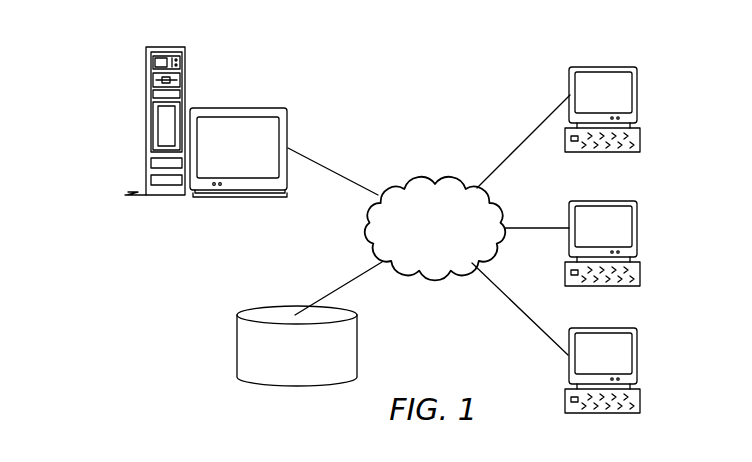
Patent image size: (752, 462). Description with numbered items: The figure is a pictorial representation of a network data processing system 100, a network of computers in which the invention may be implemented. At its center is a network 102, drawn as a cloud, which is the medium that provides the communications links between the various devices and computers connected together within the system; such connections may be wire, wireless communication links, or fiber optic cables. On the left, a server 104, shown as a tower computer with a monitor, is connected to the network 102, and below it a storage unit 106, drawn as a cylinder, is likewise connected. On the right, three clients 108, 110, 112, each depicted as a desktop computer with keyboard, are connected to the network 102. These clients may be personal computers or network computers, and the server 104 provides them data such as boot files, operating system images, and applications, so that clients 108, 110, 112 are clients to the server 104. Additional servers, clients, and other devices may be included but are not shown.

The network data processing system 100 is at (366, 74).
The network 102 is at (408, 183).
The server 104 is at (145, 122).
The storage unit 106 is at (237, 348).
The client 108 is at (638, 95).
The client 110 is at (637, 228).
The client 112 is at (637, 360).